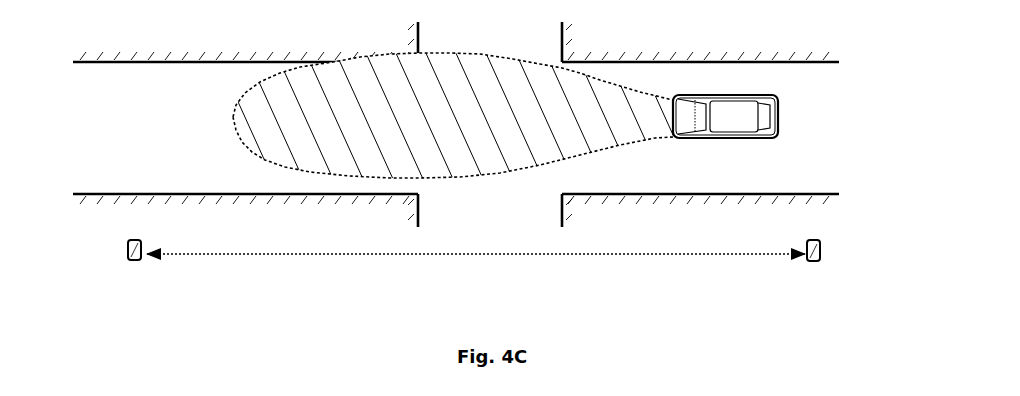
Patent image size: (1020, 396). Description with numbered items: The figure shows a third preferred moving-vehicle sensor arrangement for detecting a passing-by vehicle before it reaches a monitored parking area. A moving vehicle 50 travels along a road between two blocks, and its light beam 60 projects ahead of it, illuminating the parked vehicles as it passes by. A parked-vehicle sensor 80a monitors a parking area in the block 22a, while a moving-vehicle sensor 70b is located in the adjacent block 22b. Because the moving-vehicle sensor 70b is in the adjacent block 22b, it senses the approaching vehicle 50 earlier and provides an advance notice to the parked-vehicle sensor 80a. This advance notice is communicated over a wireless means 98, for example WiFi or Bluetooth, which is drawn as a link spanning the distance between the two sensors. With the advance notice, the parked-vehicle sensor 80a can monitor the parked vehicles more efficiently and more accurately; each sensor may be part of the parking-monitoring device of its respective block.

The block 22a is at (128, 147).
The adjacent block 22b is at (803, 147).
The moving vehicle 50 is at (725, 116).
The light beam 60 is at (466, 178).
The moving-vehicle sensor 70b is at (807, 261).
The parked-vehicle sensor 80a is at (128, 262).
The wireless means 98 is at (423, 257).